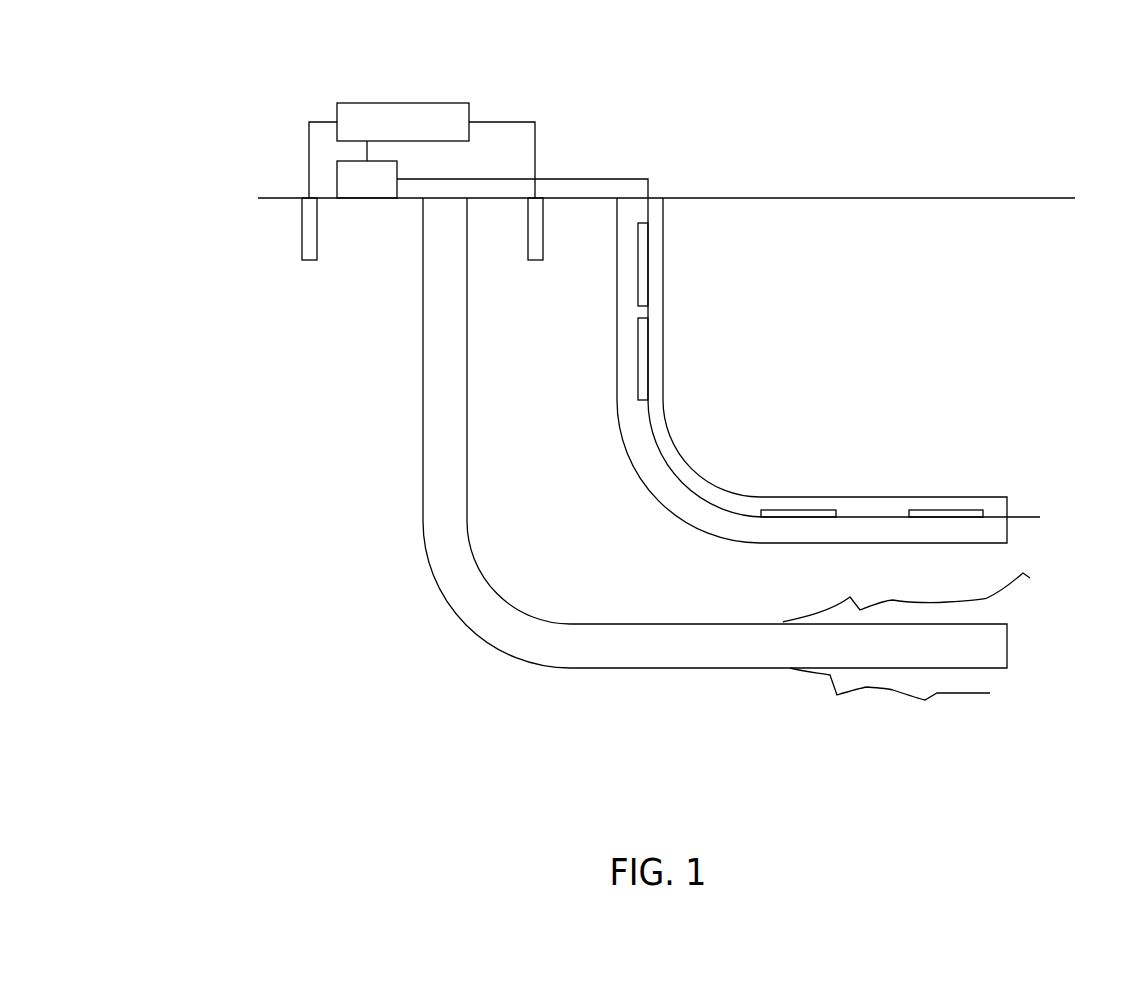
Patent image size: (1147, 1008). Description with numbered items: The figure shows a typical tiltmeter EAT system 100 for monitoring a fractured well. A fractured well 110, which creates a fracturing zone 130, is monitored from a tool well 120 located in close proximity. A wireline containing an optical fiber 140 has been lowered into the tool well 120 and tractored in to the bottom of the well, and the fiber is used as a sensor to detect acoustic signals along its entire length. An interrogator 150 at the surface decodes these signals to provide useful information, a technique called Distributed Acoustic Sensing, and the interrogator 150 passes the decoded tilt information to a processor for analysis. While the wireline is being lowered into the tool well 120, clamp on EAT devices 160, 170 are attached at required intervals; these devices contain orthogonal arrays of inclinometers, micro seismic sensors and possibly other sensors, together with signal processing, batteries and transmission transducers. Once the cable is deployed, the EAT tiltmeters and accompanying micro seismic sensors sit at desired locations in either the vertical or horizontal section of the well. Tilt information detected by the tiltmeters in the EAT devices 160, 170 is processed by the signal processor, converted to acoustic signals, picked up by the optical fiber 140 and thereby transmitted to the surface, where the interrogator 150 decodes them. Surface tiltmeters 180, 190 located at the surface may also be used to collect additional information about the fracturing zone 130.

The tiltmeter EAT system 100 is at (657, 92).
The fractured well 110 is at (422, 513).
The tool well 120 is at (658, 497).
The fracturing zone 130 is at (1020, 607).
The optical fiber 140 is at (656, 455).
The interrogator 150 is at (287, 138).
The clamp on EAT device 160 is at (638, 277).
The clamp on EAT device 170 is at (818, 510).
The surface tiltmeter 180 is at (543, 233).
The surface tiltmeter 190 is at (302, 230).